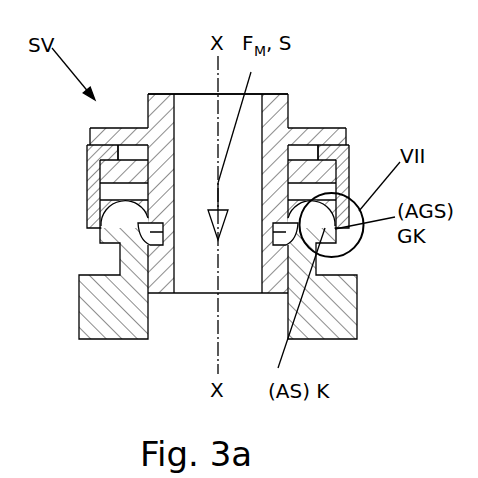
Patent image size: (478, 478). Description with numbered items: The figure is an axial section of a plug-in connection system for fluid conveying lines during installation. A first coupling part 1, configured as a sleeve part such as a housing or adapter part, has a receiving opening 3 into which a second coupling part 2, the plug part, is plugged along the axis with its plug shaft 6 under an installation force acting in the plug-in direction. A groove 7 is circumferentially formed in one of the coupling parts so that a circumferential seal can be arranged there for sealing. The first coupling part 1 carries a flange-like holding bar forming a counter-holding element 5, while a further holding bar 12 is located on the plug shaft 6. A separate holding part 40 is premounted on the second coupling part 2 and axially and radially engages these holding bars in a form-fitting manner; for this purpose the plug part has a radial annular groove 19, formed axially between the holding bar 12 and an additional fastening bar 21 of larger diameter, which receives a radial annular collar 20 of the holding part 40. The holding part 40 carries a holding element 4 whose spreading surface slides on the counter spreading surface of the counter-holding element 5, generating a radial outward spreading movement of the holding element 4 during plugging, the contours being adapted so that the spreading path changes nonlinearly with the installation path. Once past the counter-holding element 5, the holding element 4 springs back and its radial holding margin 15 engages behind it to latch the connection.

The first coupling part 1 is at (348, 298).
The second coupling part 2 is at (281, 118).
The receiving opening 3 is at (186, 326).
The holding element 4 is at (100, 217).
The counter-holding element 5 is at (115, 232).
The plug shaft 6 is at (163, 100).
The groove 7 is at (147, 225).
The holding bar 12 is at (357, 200).
The radial holding margin 15 is at (103, 195).
The radial annular groove 19 is at (128, 152).
The radial annular collar 20 is at (90, 143).
The fastening bar 21 is at (333, 143).
The holding part 40 is at (87, 154).